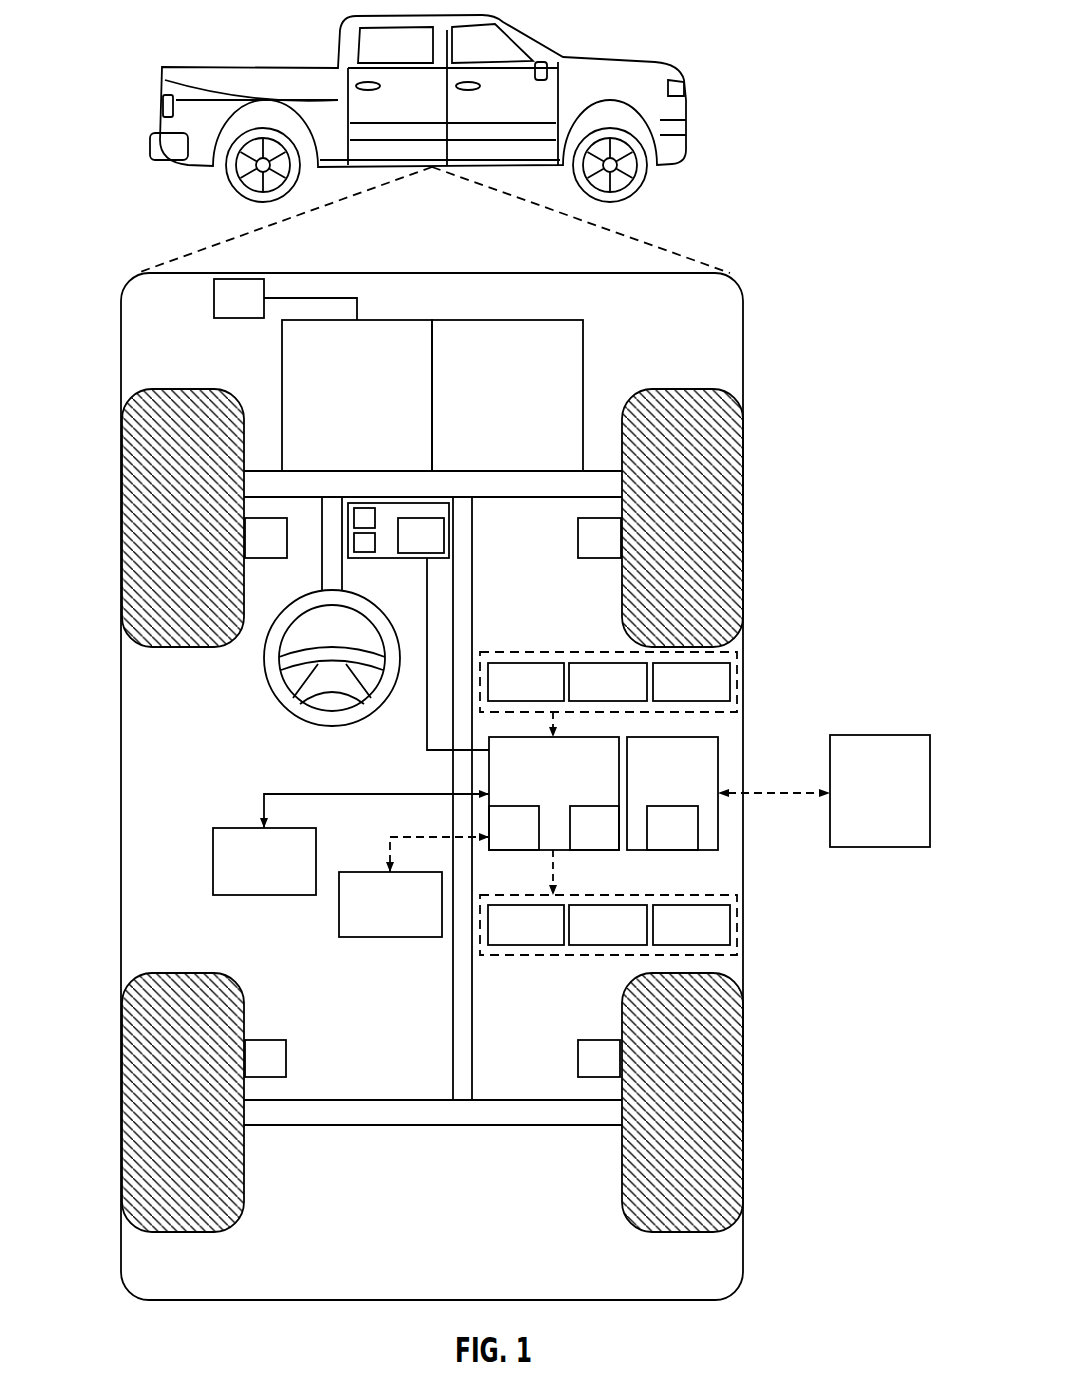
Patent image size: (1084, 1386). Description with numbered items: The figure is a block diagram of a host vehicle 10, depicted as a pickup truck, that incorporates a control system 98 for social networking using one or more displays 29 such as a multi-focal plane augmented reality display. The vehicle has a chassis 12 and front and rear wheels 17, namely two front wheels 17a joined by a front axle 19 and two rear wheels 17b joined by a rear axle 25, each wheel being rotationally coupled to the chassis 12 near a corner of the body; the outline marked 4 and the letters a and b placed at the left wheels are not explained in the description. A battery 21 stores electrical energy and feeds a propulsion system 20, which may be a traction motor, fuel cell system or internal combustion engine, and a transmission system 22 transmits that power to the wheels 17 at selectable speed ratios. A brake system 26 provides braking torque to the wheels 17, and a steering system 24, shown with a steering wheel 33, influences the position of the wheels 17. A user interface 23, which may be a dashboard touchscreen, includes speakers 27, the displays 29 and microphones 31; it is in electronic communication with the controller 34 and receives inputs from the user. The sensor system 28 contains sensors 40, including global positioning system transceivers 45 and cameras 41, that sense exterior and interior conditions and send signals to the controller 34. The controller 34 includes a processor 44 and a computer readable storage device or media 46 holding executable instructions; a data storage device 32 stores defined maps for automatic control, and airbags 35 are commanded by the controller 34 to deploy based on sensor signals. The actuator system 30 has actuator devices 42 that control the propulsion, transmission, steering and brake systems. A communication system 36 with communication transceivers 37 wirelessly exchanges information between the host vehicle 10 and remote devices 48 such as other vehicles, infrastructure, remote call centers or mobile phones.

The host vehicle 10 is at (624, 60).
The vehicle body 4 is at (121, 748).
The battery 21 is at (240, 279).
The propulsion system 20 is at (357, 395).
The transmission system 22 is at (507, 395).
The front and rear wheels 17 is at (474, 795).
The front wheels 17a is at (720, 505).
The rear wheels 17b is at (717, 1102).
The front left wheel a is at (145, 505).
The rear left wheel b is at (145, 1097).
The brake system 26 is at (433, 797).
The front axle 19 is at (545, 498).
The rear axle 25 is at (510, 1100).
The chassis 12 is at (453, 972).
The user interface 23 is at (377, 592).
The speakers 27 is at (363, 508).
The displays 29 is at (354, 545).
The microphones 31 is at (421, 535).
The steering system 24 is at (354, 567).
The steering wheel 33 is at (268, 675).
The control system 98 is at (398, 768).
The airbags 35 is at (264, 861).
The data storage device 32 is at (414, 885).
The sensor system 28 is at (608, 661).
The sensors 40 is at (526, 682).
The global positioning system transceivers 45 is at (608, 682).
The cameras 41 is at (691, 682).
The controller 34 is at (554, 793).
The processor 44 is at (514, 828).
The computer readable storage device or media 46 is at (594, 828).
The communication system 36 is at (672, 793).
The communication transceivers 37 is at (672, 828).
The remote devices 48 is at (824, 791).
The actuator system 30 is at (608, 946).
The actuator devices 42 is at (567, 955).